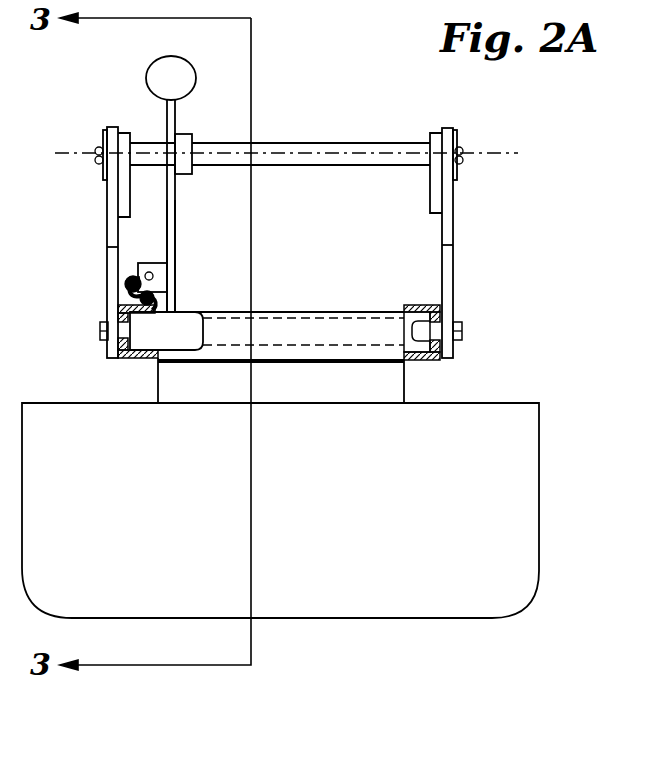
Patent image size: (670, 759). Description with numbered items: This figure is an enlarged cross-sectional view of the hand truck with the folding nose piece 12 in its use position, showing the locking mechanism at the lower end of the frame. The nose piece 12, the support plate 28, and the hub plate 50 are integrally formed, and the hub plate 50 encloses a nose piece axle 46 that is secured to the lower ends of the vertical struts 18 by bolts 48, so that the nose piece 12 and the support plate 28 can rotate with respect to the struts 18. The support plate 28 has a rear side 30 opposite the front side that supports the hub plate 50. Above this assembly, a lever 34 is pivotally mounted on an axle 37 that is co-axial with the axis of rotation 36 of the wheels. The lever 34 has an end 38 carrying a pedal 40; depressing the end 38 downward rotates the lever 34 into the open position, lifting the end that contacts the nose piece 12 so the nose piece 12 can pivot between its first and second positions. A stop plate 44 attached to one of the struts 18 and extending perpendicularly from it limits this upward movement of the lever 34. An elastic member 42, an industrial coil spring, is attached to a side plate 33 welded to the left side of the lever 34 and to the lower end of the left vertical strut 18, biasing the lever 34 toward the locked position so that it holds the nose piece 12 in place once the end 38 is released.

The folding nose piece 12 is at (407, 524).
The vertical struts 18 is at (135, 357).
The support plate 28 is at (418, 392).
The rear side 30 is at (340, 358).
The side plate 33 is at (145, 262).
The lever 34 is at (176, 207).
The axis of rotation 36 is at (497, 153).
The axle 37 is at (290, 143).
The end 38 is at (168, 118).
The pedal 40 is at (173, 70).
The elastic member 42 is at (128, 282).
The stop plate 44 is at (180, 318).
The nose piece axle 46 is at (283, 330).
The bolts 48 is at (100, 333).
The hub plate 50 is at (263, 312).